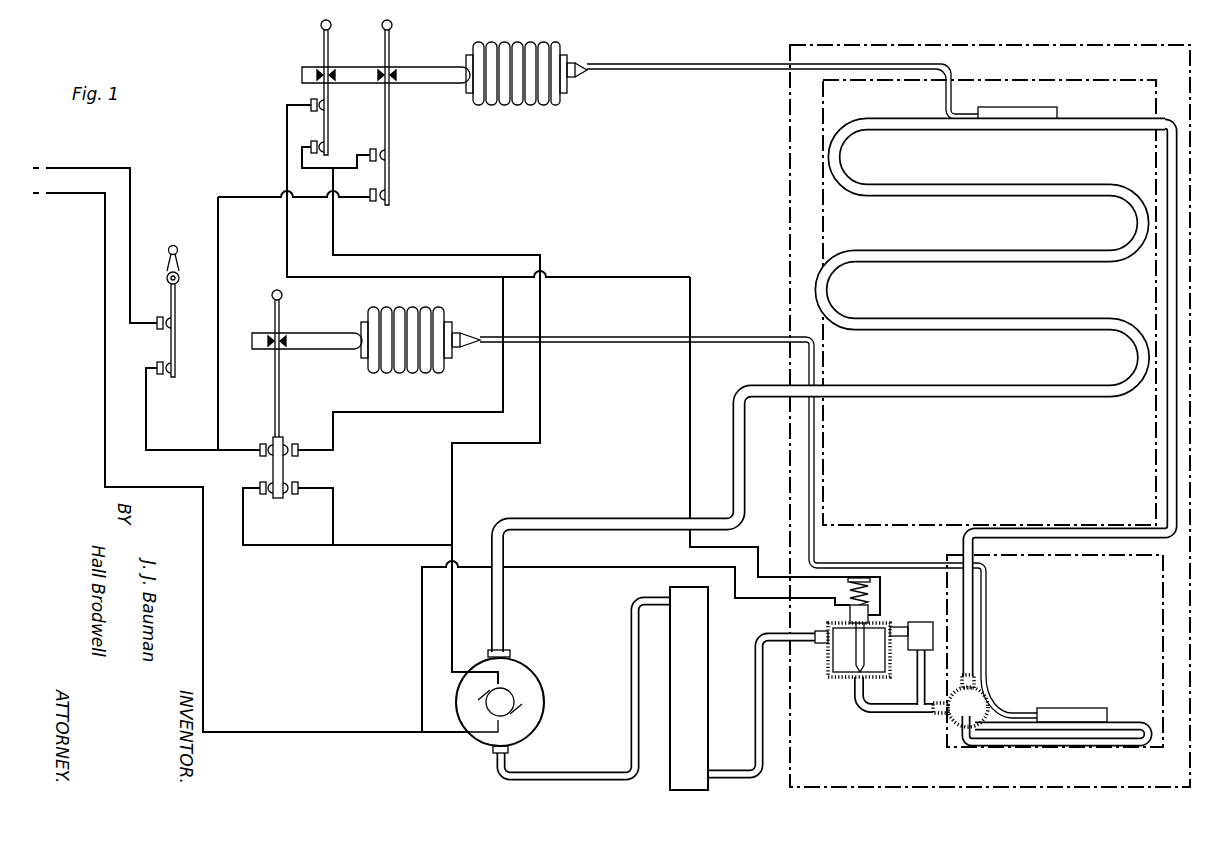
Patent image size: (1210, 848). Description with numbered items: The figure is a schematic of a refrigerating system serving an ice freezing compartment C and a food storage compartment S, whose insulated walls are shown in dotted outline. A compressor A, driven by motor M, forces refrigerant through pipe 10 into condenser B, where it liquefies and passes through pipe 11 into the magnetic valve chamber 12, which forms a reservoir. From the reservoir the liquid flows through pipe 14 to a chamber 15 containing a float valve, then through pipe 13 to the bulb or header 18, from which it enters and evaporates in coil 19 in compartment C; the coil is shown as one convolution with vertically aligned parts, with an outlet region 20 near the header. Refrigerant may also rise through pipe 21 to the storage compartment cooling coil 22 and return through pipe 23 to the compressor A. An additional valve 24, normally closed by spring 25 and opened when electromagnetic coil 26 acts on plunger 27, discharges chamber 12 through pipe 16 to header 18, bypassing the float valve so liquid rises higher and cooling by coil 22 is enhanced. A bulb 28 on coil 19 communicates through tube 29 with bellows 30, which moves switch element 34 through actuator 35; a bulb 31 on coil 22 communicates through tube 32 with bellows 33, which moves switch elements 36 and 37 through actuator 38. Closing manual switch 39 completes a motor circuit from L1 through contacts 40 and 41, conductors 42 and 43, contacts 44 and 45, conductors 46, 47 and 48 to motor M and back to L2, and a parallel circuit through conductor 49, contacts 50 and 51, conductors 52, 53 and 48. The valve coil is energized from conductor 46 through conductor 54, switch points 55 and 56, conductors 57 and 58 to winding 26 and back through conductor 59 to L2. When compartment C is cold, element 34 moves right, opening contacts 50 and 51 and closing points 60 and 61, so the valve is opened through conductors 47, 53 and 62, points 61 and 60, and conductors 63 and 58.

The pipe 10 is at (572, 775).
The pipe 11 is at (722, 770).
The magnetic valve chamber 12 is at (833, 653).
The pipe 13 is at (917, 690).
The pipe 14 is at (901, 624).
The chamber containing a float valve 15 is at (923, 620).
The pipe 16 is at (884, 714).
The bulb or header 18 is at (946, 723).
The coil 19 is at (1126, 722).
The outlet 20 is at (990, 748).
The pipe 21 is at (1166, 286).
The food storage compartment cooling coil 22 is at (996, 190).
The pipe 23 is at (580, 518).
The valve 24 is at (858, 663).
The spring 25 is at (870, 594).
The electromagnetic coil 26 is at (835, 614).
The plunger 27 is at (860, 578).
The bulb 28 is at (1072, 708).
The tube 29 is at (855, 470).
The expansible bellows 30 is at (416, 307).
The bulb 31 is at (1040, 107).
The tube 32 is at (741, 64).
The expansible bellows 33 is at (536, 41).
The movable switch element 34 is at (280, 388).
The actuator 35 is at (323, 337).
The movable switch element 36 is at (390, 48).
The movable switch element 37 is at (330, 48).
The actuator 38 is at (441, 66).
The manual switch 39 is at (177, 257).
The switch contact 40 is at (160, 316).
The switch contact 41 is at (158, 362).
The conductor 42 is at (146, 405).
The conductor 43 is at (218, 405).
The switch contact 44 is at (370, 193).
The switch contact 45 is at (371, 148).
The conductor 46 is at (357, 160).
The conductor 47 is at (556, 405).
The conductor 48 is at (455, 612).
The conductor 49 is at (242, 448).
The switch contact 50 is at (261, 457).
The switch contact 51 is at (263, 495).
The conductor 52 is at (290, 545).
The conductor 53 is at (400, 545).
The conductor 54 is at (314, 169).
The switch point 55 is at (310, 146).
The switch point 56 is at (310, 102).
The conductor 57 is at (287, 246).
The conductor 58 is at (693, 366).
The conductor 59 is at (602, 568).
The switch point 60 is at (298, 444).
The switch point 61 is at (298, 482).
The conductor 62 is at (333, 512).
The conductor 63 is at (430, 412).
The supply line L1 is at (130, 218).
The supply line L2 is at (203, 587).
The motor M is at (520, 698).
The compressor A is at (543, 718).
The condenser B is at (700, 637).
The food storage compartment S is at (989, 302).
The ice freezing compartment C is at (1055, 651).